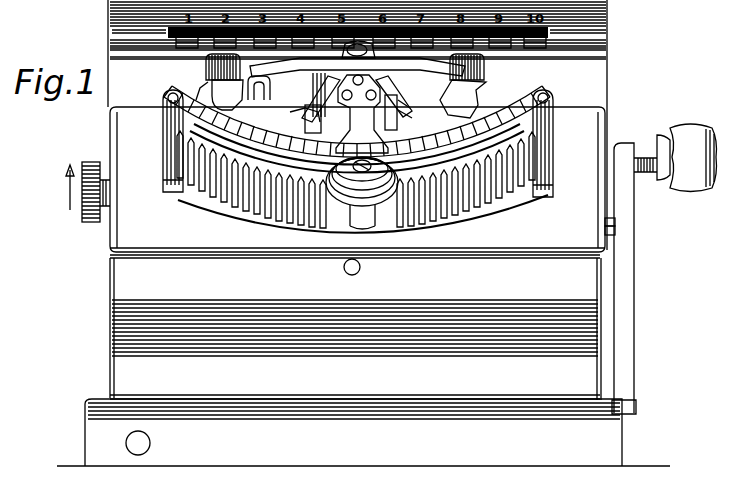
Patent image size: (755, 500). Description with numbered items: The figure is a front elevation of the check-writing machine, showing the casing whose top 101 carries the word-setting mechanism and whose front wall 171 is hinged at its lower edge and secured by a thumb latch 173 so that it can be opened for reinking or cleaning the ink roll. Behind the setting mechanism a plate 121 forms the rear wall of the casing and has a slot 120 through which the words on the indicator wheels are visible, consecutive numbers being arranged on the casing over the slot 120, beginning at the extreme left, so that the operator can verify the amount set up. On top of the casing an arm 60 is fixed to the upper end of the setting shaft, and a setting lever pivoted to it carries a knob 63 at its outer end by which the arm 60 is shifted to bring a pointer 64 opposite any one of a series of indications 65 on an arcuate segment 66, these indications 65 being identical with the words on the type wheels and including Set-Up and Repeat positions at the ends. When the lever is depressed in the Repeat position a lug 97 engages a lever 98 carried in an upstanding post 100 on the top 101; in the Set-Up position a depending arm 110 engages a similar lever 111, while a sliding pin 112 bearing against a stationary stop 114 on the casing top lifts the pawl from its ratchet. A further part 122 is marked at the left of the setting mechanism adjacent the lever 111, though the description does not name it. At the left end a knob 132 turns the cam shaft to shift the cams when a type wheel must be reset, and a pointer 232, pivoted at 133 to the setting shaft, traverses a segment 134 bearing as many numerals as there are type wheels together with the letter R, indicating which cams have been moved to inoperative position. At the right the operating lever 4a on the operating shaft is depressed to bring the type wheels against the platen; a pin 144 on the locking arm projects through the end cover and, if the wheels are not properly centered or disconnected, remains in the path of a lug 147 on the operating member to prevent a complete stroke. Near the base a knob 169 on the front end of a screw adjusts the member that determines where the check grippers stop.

The operating lever 4a is at (624, 293).
The arm 60 is at (358, 161).
The knob 63 is at (385, 212).
The pointer 64 is at (379, 114).
The indications 65 is at (357, 121).
The arcuate segment 66 is at (418, 114).
The lug 97 is at (383, 117).
The lever 98 is at (463, 99).
The upstanding post 100 is at (498, 90).
The top of the casing 101 is at (547, 241).
The depending arm 110 is at (312, 128).
The lever 111 is at (226, 82).
The sliding pin 112 is at (298, 109).
The stationary stop 114 is at (262, 80).
The slot 120 is at (566, 28).
The plate 121 is at (578, 20).
The key lever 122 is at (200, 84).
The knob 132 is at (94, 206).
The pivot 133 is at (392, 75).
The segment 134 is at (396, 64).
The pin 144 is at (612, 222).
The lug 147 is at (614, 233).
The knob 169 is at (135, 446).
The front wall 171 is at (355, 329).
The thumb latch 173 is at (352, 272).
The pointer 232 is at (300, 63).